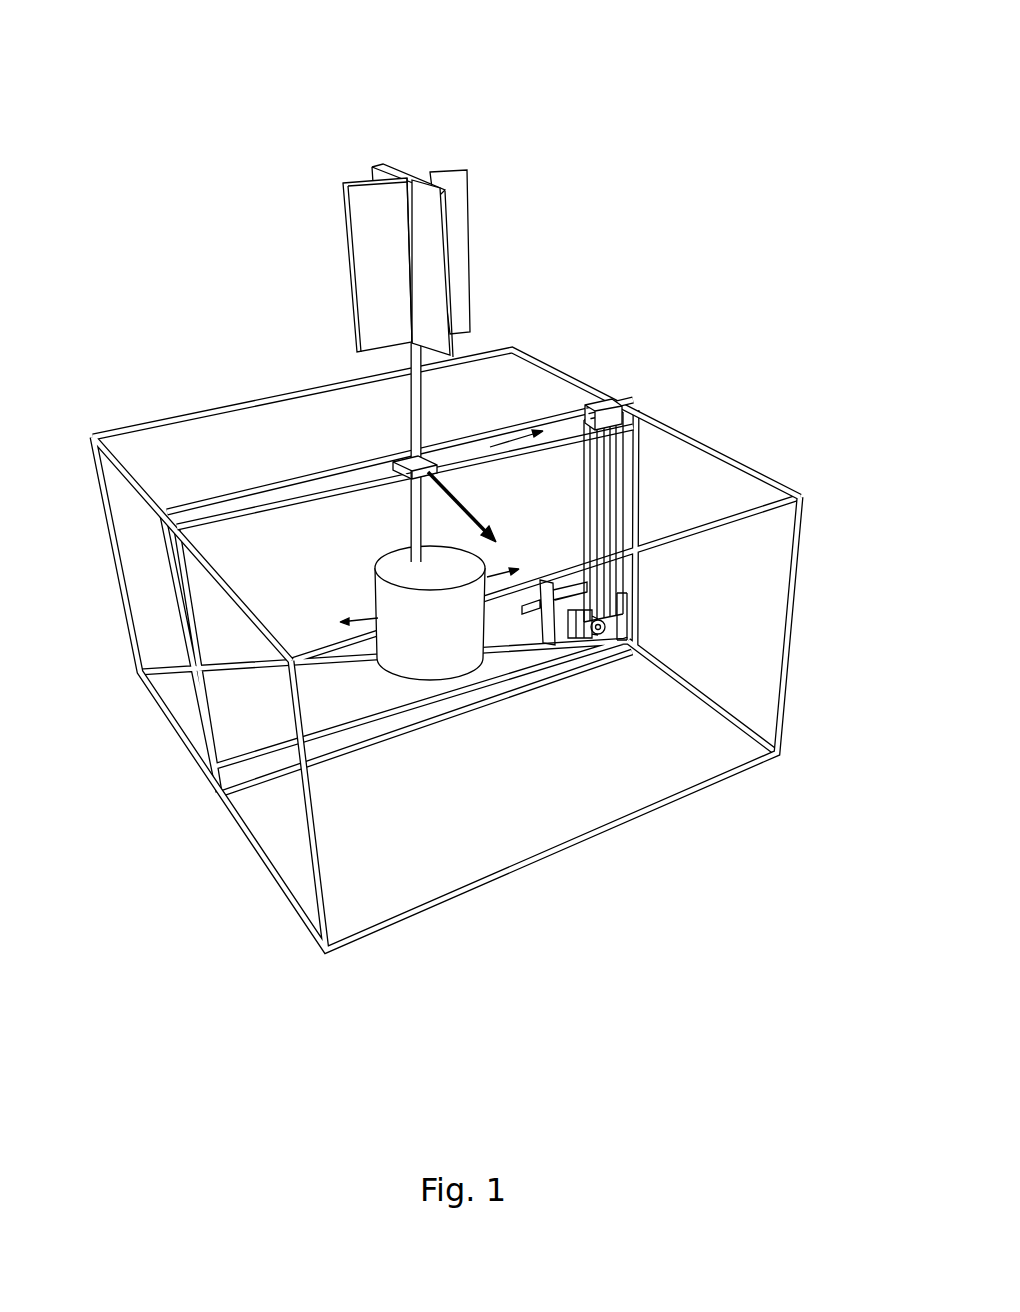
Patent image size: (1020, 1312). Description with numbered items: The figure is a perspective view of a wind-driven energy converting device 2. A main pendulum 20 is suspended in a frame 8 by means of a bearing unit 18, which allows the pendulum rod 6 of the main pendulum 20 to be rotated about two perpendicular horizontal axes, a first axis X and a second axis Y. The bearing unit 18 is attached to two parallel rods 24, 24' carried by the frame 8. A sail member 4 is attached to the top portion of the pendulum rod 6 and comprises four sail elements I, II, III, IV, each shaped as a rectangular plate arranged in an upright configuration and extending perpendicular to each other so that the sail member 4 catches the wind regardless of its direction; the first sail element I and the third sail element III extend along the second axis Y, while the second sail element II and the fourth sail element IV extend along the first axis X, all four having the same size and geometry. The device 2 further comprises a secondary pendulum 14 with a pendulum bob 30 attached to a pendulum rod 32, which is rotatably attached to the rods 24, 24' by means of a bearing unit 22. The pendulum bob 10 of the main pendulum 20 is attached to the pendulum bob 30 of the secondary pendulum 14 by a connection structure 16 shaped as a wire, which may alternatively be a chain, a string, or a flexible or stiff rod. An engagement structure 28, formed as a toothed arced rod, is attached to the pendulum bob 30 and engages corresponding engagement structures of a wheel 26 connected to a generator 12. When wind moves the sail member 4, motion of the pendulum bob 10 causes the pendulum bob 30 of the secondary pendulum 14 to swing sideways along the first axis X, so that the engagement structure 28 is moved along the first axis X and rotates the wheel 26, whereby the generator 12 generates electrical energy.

The wind-driven energy converting device 2 is at (155, 118).
The sail member 4 is at (420, 207).
The pendulum rod 6 is at (415, 512).
The frame 8 is at (213, 415).
The pendulum bob 10 is at (373, 597).
The generator 12 is at (552, 620).
The secondary pendulum 14 is at (577, 496).
The connection structure 16 is at (522, 605).
The bearing unit 18 is at (406, 452).
The main pendulum 20 is at (352, 440).
The bearing unit 22 is at (603, 411).
The rod 24 is at (400, 456).
The rod 24' is at (405, 495).
The wheel 26 is at (594, 640).
The engagement structure 28 is at (628, 648).
The pendulum bob 30 is at (593, 523).
The pendulum rod 32 is at (583, 475).
The first sail element I is at (486, 252).
The second sail element II is at (430, 221).
The third sail element III is at (378, 160).
The fourth sail element IV is at (343, 250).
The first axis X is at (445, 572).
The second axis Y is at (480, 440).